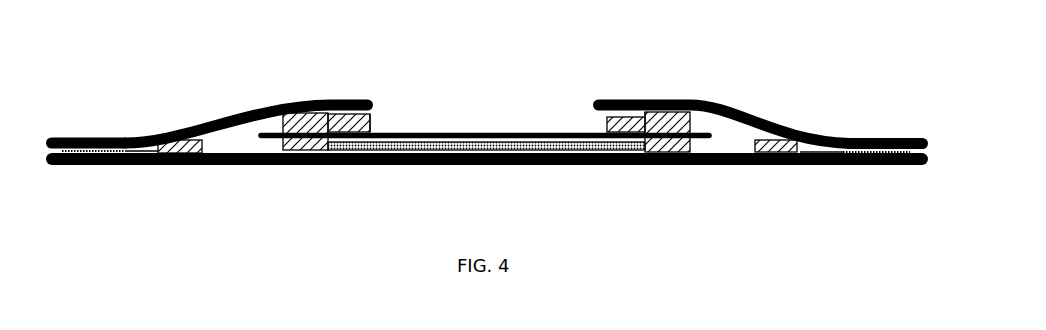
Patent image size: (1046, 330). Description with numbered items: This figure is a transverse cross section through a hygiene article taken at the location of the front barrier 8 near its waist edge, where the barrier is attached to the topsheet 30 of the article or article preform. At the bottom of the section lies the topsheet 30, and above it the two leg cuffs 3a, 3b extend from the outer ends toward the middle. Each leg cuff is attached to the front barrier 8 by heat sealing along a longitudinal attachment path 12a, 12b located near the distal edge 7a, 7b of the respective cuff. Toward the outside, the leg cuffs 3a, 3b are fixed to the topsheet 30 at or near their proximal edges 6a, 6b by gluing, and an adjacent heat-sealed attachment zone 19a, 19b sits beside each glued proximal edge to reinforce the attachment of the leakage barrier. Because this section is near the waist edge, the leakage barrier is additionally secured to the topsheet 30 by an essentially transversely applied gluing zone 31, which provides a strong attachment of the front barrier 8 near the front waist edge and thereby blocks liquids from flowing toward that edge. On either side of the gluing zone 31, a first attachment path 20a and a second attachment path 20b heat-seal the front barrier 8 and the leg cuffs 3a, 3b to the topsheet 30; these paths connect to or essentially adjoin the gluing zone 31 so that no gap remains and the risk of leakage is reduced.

The leg cuff 3a is at (257, 113).
The leg cuff 3b is at (748, 112).
The proximal edge 6a is at (103, 137).
The proximal edge 6b is at (863, 140).
The distal edge 7a is at (357, 100).
The distal edge 7b is at (615, 100).
The front barrier 8 is at (485, 81).
The longitudinal attachment path 12a is at (368, 124).
The longitudinal attachment path 12b is at (645, 108).
The heat-sealed attachment zone 19a is at (200, 163).
The heat-sealed attachment zone 19b is at (798, 165).
The first attachment path 20a is at (313, 163).
The second attachment path 20b is at (655, 165).
The topsheet 30 is at (708, 165).
The gluing zone 31 is at (460, 148).